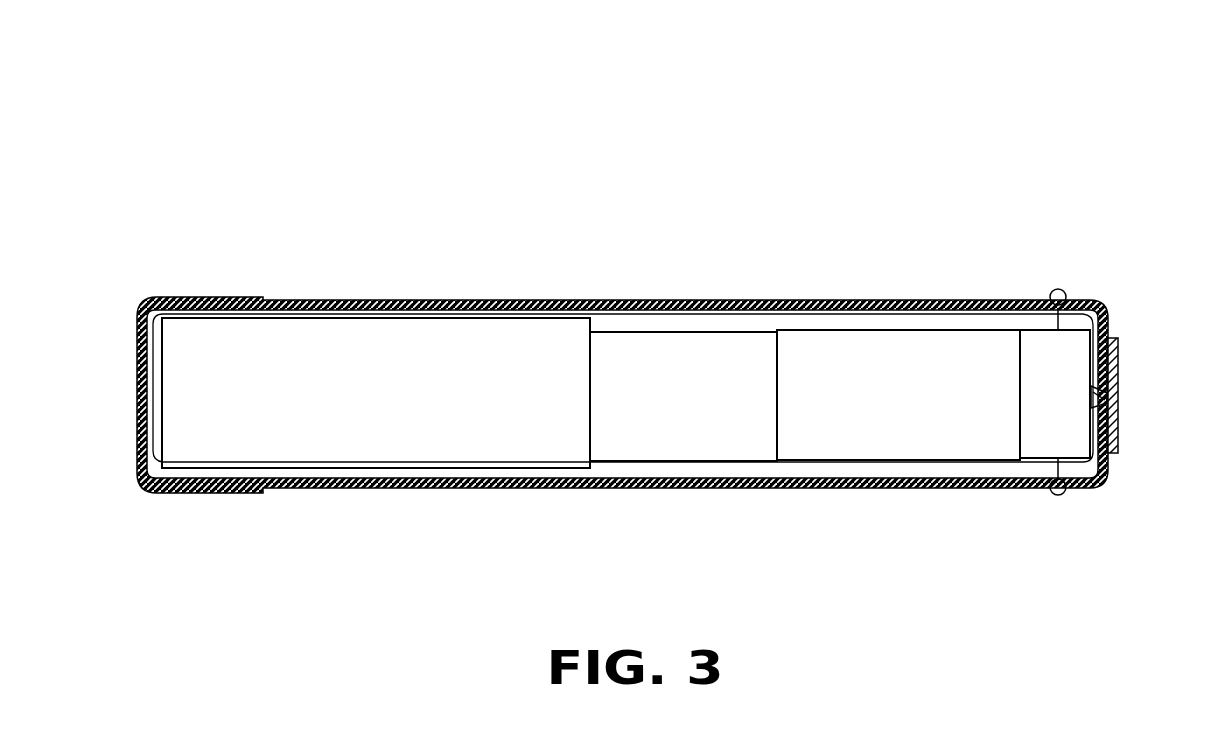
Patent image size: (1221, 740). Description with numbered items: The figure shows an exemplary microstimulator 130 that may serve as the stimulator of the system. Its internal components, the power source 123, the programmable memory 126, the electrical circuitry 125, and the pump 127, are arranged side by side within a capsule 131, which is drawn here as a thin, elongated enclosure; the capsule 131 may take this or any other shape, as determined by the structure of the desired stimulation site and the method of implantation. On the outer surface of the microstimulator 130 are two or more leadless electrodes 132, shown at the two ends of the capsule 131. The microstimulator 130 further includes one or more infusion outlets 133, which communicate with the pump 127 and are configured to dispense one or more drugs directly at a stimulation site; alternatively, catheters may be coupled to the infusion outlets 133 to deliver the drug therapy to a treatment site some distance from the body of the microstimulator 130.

The microstimulator 130 is at (407, 223).
The capsule 131 is at (533, 302).
The leadless electrodes 132 is at (137, 398).
The infusion outlets 133 is at (1060, 290).
The power source 123 is at (356, 456).
The programmable memory 126 is at (663, 456).
The electrical circuitry 125 is at (878, 456).
The pump 127 is at (1036, 452).